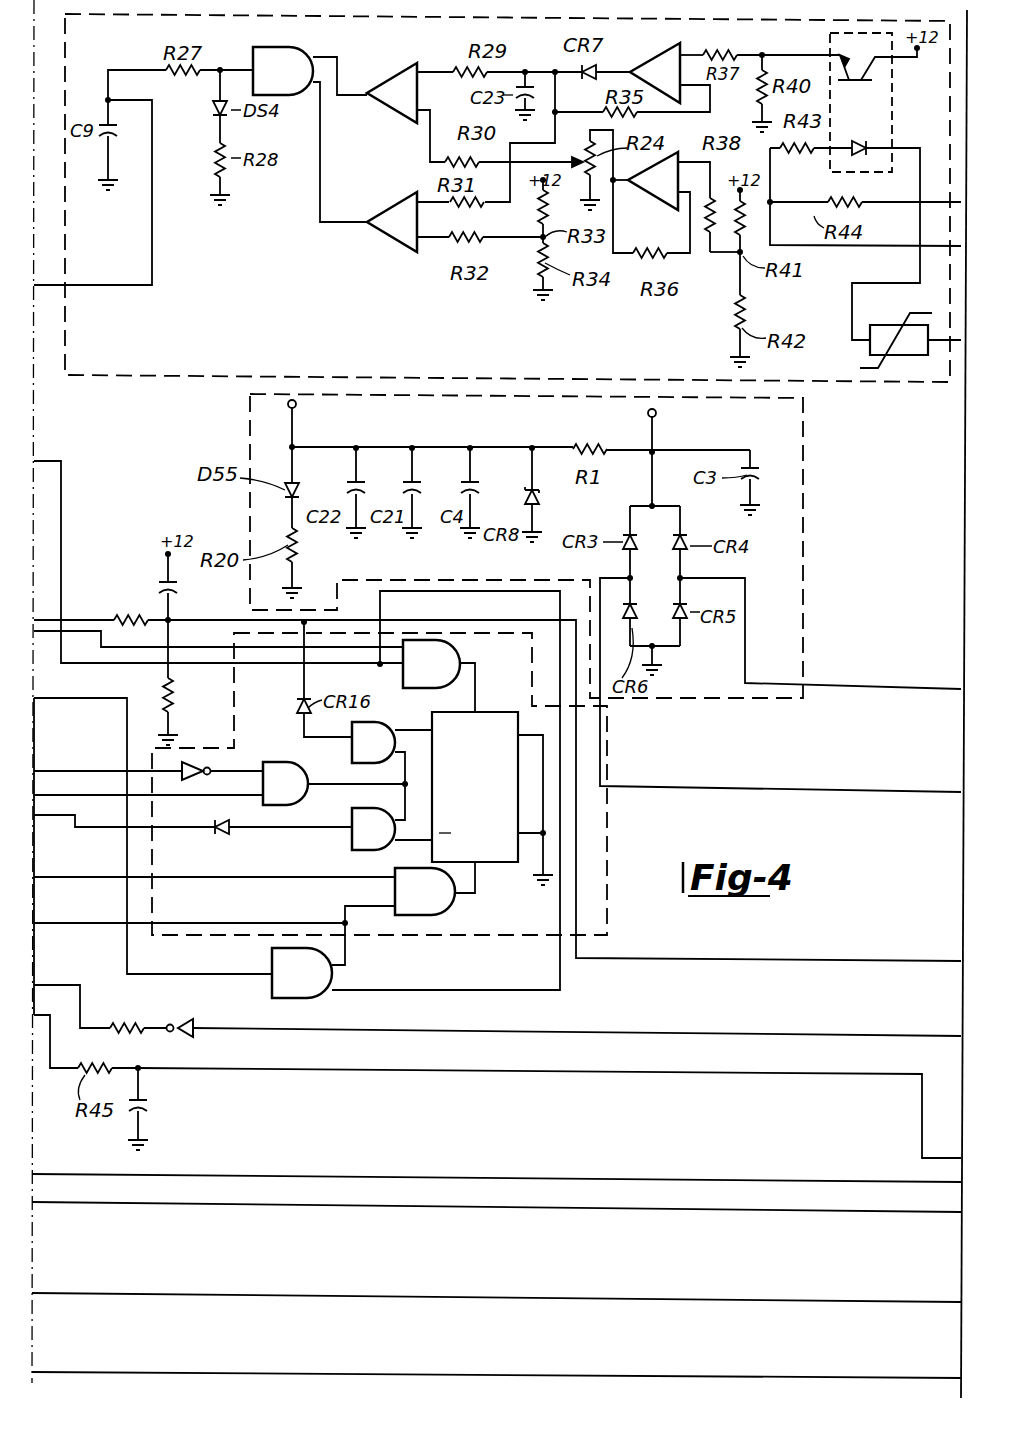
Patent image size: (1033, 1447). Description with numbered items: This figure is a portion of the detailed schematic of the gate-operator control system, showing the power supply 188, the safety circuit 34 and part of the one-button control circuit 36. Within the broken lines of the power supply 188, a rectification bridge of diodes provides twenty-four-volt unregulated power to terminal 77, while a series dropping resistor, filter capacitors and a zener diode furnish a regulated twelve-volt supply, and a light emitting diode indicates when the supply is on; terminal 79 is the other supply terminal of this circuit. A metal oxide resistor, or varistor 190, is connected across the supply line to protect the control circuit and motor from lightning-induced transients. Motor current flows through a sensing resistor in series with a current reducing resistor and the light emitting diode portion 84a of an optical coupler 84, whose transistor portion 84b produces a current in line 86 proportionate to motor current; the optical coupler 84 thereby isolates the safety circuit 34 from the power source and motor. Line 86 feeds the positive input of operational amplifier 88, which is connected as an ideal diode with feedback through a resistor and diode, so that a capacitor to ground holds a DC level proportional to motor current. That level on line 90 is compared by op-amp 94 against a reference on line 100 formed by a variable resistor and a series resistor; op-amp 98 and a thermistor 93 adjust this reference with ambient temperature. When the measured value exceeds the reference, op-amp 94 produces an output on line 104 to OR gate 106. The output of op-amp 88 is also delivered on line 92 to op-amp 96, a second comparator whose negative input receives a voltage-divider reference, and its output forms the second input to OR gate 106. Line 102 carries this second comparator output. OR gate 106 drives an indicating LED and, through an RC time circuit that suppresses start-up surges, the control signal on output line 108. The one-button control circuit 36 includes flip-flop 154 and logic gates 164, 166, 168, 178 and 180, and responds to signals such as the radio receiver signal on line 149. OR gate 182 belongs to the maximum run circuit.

The safety circuit 34 is at (128, 378).
The one-button control circuit 36 is at (607, 828).
The terminal 77 is at (656, 413).
The input terminal 79 is at (297, 405).
The optical coupler 84 is at (829, 40).
The light emitting diode portion 84a is at (858, 140).
The transistor portion 84b is at (880, 82).
The line 86 is at (763, 55).
The operational amplifier 88 is at (662, 58).
The line 90 is at (442, 72).
The line 92 is at (585, 132).
The thermistor 93 is at (738, 260).
The op-amp 94 is at (388, 121).
The op-amp 96 is at (389, 250).
The op-amp 98 is at (648, 218).
The line 100 is at (428, 150).
The conductor 102 is at (323, 167).
The line 104 is at (338, 84).
The OR gate 106 is at (283, 71).
The output line 108 is at (100, 288).
The line 149 is at (838, 1005).
The flip-flop 154 is at (500, 810).
The logic gate 164 is at (431, 664).
The logic gate 166 is at (373, 742).
The logic gate 168 is at (285, 783).
The gate 178 is at (373, 829).
The gate 180 is at (425, 891).
The OR gate 182 is at (302, 973).
The power supply 188 is at (803, 500).
The metal oxide resistor (varistor) 190 is at (904, 364).